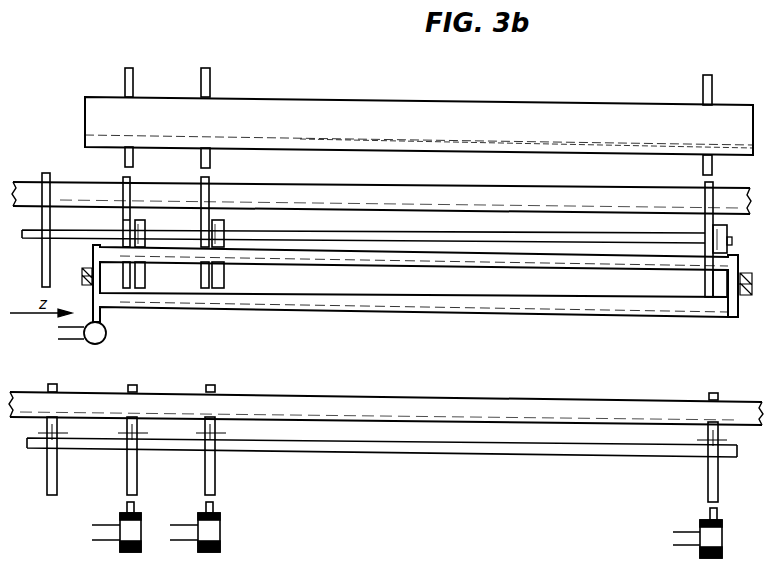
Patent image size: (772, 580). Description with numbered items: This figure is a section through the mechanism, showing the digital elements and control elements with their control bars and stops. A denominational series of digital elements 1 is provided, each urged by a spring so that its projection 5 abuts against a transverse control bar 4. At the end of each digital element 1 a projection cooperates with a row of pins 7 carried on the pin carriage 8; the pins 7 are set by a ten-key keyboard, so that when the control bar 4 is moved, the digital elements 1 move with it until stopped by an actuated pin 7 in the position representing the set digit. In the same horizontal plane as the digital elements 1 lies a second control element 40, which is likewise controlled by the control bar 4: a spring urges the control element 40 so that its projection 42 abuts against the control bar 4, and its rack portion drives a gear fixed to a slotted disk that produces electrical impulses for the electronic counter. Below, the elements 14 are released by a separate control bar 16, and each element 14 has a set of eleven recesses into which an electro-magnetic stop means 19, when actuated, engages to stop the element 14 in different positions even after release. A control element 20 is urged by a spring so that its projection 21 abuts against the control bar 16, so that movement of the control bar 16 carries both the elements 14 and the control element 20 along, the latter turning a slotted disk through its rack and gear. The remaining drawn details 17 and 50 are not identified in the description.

The digital element 1 is at (122, 222).
The transverse control bar 4 is at (250, 189).
The projection 5 is at (122, 178).
The pin 7 is at (201, 75).
The pin carriage 8 is at (313, 109).
The element 14 is at (135, 480).
The control bar 16 is at (381, 402).
The post head 17 is at (136, 390).
The electro-magnetic stop means 19 is at (137, 525).
The control element 20 is at (52, 478).
The projection 21 is at (50, 385).
The second control element 40 is at (44, 265).
The projection 42 is at (45, 174).
The roller 50 is at (147, 228).